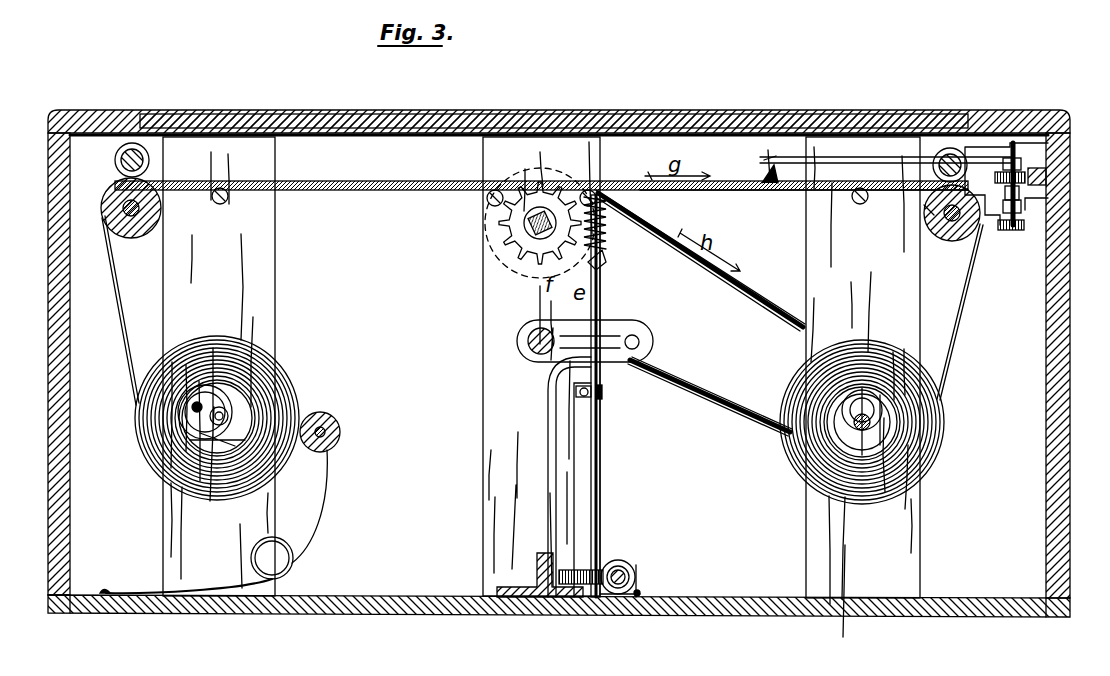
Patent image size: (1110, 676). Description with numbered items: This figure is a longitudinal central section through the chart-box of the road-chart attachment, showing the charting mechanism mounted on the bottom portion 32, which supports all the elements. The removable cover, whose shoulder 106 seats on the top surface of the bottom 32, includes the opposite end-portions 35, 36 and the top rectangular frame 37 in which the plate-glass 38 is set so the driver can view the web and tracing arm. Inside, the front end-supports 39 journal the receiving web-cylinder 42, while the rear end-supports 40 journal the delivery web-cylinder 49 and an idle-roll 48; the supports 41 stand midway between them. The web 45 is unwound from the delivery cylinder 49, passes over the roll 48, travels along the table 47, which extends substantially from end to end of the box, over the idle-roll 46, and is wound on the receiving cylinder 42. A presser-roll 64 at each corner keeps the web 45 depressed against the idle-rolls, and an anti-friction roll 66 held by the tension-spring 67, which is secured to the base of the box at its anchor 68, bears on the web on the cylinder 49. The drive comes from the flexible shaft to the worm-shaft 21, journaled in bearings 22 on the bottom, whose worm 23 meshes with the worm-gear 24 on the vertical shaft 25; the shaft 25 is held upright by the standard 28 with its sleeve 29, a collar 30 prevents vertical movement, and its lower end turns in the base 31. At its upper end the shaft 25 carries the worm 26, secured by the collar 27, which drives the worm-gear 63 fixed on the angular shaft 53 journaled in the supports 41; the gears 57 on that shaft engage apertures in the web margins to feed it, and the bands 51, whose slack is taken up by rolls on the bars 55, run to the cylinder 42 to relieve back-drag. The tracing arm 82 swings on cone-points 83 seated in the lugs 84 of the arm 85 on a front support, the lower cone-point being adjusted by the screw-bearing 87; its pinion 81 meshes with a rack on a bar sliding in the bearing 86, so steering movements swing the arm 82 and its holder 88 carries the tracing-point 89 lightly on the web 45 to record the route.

The worm-shaft 21 is at (642, 578).
The bearings 22 is at (632, 600).
The worm 23 is at (625, 562).
The worm-gear 24 is at (572, 586).
The vertical shaft 25 is at (601, 481).
The worm 26 is at (603, 216).
The collar 27 is at (602, 262).
The standard 28 is at (557, 450).
The sleeve 29 is at (601, 384).
The collar 30 is at (602, 395).
The base 31 is at (520, 598).
The bottom portion 32 is at (762, 612).
The end-portion 35 is at (1064, 433).
The end-portion 36 is at (48, 384).
The rectangular frame 37 is at (1010, 120).
The plate-glass 38 is at (697, 113).
The front end-supports 39 is at (806, 245).
The rear end-supports 40 is at (278, 243).
The supports 41 is at (510, 328).
The receiving web-cylinder 42 is at (874, 422).
The web 45 is at (350, 181).
The idle-roll 46 is at (962, 232).
The table 47 is at (733, 191).
The idle-roll 48 is at (136, 230).
The delivery web-cylinder 49 is at (242, 388).
The bands 51 is at (750, 294).
The angular shaft 53 is at (534, 240).
The bars 55 is at (648, 330).
The gears 57 is at (504, 219).
The worm-gear 63 is at (524, 232).
The presser-roll 64 is at (114, 158).
The anti-friction roll 66 is at (341, 432).
The tension-spring 67 is at (318, 541).
The wire anchor 68 is at (106, 588).
The pinion 81 is at (1050, 150).
The arm 82 is at (838, 156).
The cone-points 83 is at (1020, 150).
The lugs 84 is at (1005, 157).
The arm 85 is at (924, 208).
The bearing 86 is at (1048, 178).
The screw-bearing 87 is at (1025, 226).
The holder or socket 88 is at (766, 158).
The tracing-point 89 is at (765, 186).
The shoulder 106 is at (62, 608).